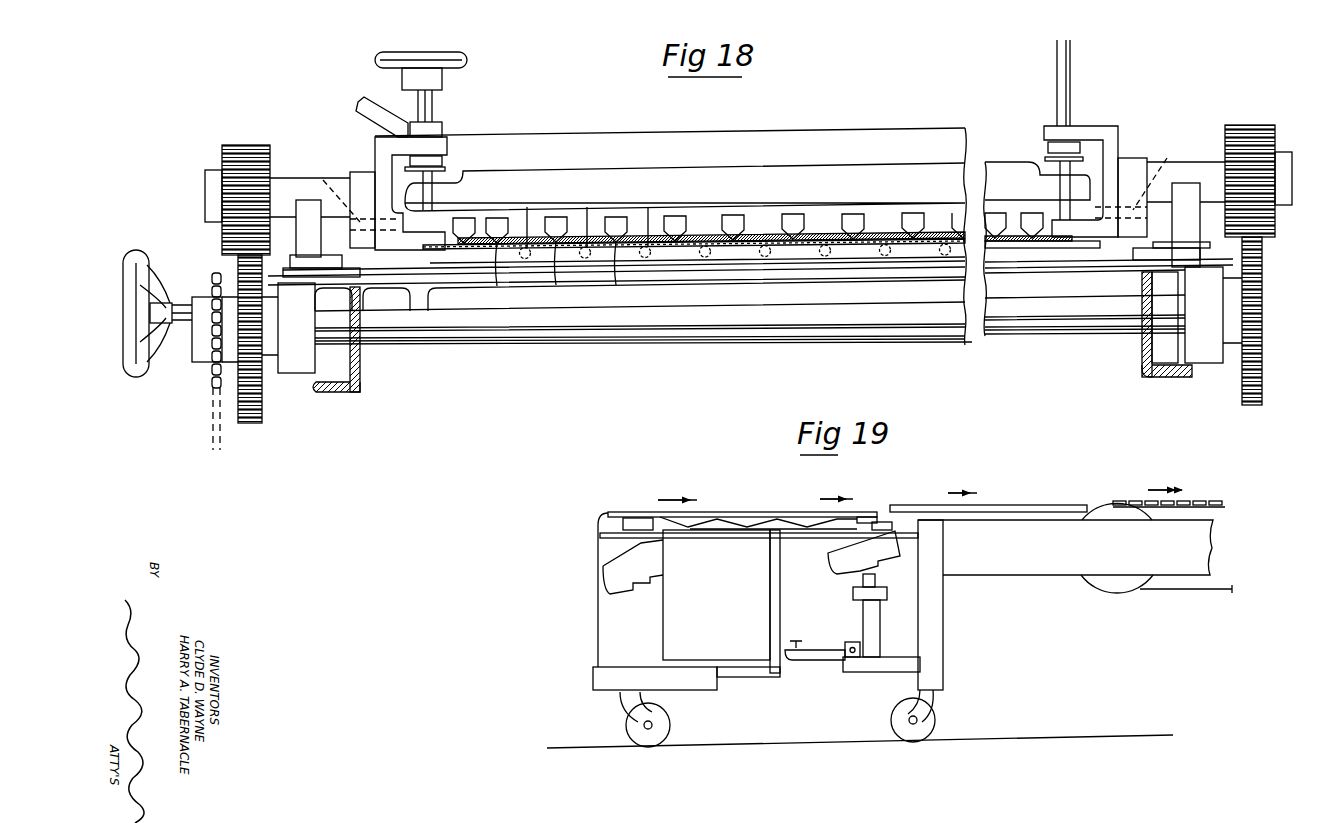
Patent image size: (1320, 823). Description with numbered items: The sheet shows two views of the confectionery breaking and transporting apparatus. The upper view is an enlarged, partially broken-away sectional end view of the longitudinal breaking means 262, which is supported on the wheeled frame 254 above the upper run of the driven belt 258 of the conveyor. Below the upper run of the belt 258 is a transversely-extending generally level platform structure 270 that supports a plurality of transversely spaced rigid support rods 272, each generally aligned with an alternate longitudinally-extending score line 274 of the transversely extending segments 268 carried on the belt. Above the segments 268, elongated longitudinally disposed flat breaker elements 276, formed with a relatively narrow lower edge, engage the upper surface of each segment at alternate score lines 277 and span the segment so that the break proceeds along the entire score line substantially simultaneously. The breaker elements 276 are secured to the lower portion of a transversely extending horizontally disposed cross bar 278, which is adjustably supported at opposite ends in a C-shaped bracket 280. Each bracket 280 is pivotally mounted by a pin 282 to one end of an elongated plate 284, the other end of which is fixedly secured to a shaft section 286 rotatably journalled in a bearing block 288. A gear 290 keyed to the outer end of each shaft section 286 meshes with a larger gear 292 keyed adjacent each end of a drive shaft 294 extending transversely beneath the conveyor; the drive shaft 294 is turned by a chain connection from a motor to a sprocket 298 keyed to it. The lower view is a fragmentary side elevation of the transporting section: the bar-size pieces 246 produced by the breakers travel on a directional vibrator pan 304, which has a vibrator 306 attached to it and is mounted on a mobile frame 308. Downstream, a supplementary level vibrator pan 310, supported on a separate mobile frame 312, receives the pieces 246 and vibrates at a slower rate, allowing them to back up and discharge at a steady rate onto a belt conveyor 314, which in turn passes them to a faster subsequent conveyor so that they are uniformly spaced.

In FIG. 19, the bar-size pieces 246 is at (1215, 503).
In FIG. 18, the wheeled frame 254 is at (335, 392).
In FIG. 18, the driven belt 258 is at (1048, 247).
In FIG. 18, the longitudinal breaking means 262 is at (872, 108).
In FIG. 18, the transversely extending segments 268 is at (695, 239).
In FIG. 18, the platform structure 270 is at (657, 278).
In FIG. 18, the support rods 272 is at (765, 262).
In FIG. 18, the longitudinal score lines 274 is at (600, 217).
In FIG. 18, the elongated flat breaker elements 276 is at (494, 225).
In FIG. 18, the alternate score lines 277 is at (565, 276).
In FIG. 18, the cross bar 278 is at (523, 171).
In FIG. 18, the C-shaped bracket 280 is at (380, 146).
In FIG. 18, the pin 282 is at (748, 183).
In FIG. 18, the elongated plate 284 is at (363, 180).
In FIG. 18, the shaft section 286 is at (281, 178).
In FIG. 18, the bearing block 288 is at (307, 200).
In FIG. 18, the gear 290 is at (232, 148).
In FIG. 18, the larger gear 292 is at (250, 423).
In FIG. 18, the drive shaft 294 is at (862, 322).
In FIG. 18, the sprocket 298 is at (212, 365).
In FIG. 19, the directional vibrator pan 304 is at (733, 508).
In FIG. 19, the vibrator 306 is at (625, 594).
In FIG. 19, the mobile frame 308 is at (600, 663).
In FIG. 19, the supplementary level vibrator pan 310 is at (1001, 503).
In FIG. 19, the mobile frame 312 is at (1017, 577).
In FIG. 19, the belt conveyor 314 is at (1102, 502).